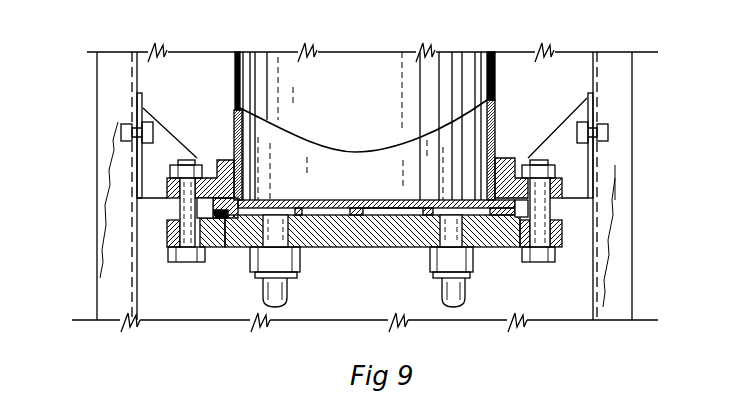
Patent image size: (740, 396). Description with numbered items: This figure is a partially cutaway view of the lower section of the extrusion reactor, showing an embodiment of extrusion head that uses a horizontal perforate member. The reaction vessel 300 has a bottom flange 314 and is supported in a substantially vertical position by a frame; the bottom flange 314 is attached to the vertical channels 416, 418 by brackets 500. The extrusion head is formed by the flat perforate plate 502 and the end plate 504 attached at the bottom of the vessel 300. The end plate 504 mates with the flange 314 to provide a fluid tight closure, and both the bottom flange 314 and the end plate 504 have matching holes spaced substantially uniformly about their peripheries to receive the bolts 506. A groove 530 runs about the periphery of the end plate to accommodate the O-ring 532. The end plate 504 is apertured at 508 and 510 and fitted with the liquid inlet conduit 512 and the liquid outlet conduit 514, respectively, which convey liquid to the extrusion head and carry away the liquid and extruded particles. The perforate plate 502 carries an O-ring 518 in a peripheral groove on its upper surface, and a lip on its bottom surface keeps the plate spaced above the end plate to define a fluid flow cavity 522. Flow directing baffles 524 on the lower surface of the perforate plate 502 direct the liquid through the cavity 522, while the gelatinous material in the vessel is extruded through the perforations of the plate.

The reaction vessel 300 is at (500, 82).
The bottom flange 314 is at (227, 155).
The vertical channel 416 is at (112, 81).
The vertical channel 418 is at (613, 92).
The bracket 500 is at (157, 133).
The flat perforate plate 502 is at (310, 200).
The end plate 504 is at (243, 248).
The bolt 506 is at (175, 258).
The aperture 508 is at (292, 243).
The aperture 510 is at (470, 248).
The liquid inlet conduit 512 is at (290, 294).
The liquid outlet conduit 514 is at (466, 294).
The O-ring 518 is at (548, 211).
The fluid flow cavity 522 is at (389, 207).
The flow directing baffle 524 is at (297, 198).
The groove 530 is at (220, 248).
The O-ring 532 is at (242, 199).